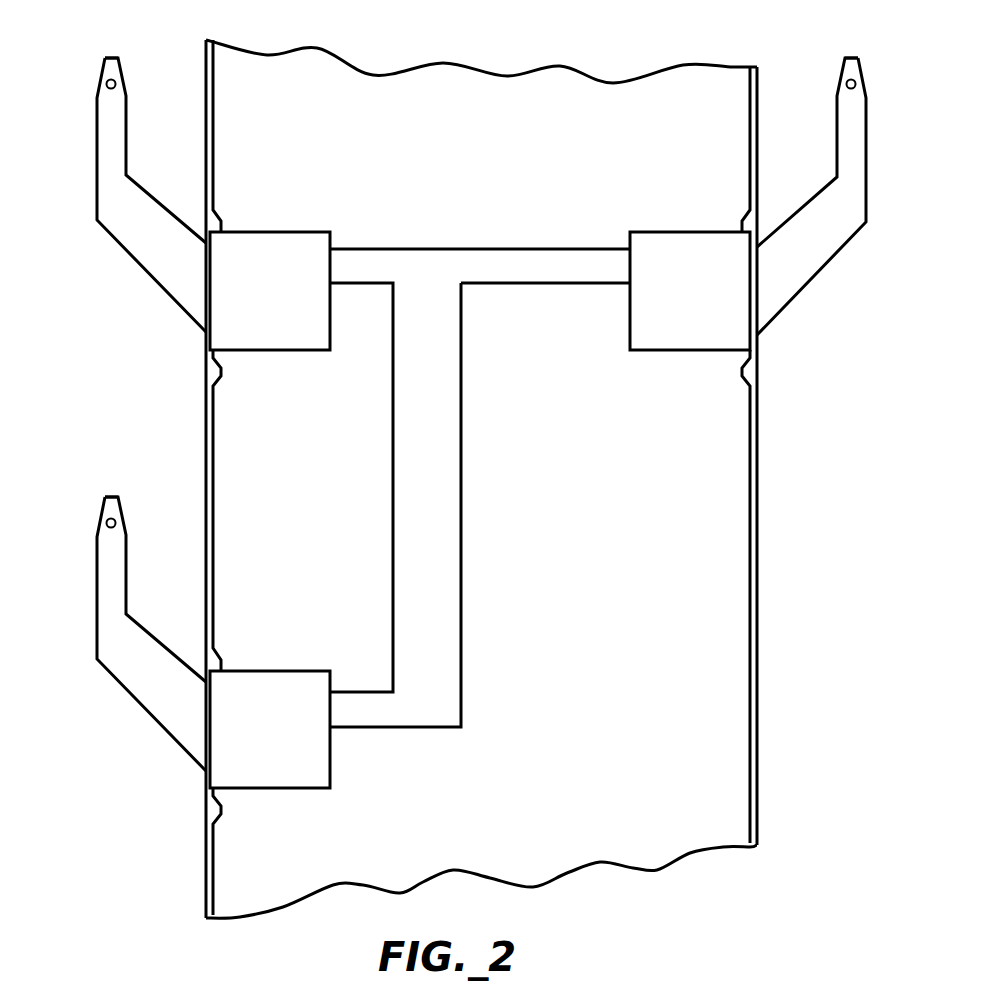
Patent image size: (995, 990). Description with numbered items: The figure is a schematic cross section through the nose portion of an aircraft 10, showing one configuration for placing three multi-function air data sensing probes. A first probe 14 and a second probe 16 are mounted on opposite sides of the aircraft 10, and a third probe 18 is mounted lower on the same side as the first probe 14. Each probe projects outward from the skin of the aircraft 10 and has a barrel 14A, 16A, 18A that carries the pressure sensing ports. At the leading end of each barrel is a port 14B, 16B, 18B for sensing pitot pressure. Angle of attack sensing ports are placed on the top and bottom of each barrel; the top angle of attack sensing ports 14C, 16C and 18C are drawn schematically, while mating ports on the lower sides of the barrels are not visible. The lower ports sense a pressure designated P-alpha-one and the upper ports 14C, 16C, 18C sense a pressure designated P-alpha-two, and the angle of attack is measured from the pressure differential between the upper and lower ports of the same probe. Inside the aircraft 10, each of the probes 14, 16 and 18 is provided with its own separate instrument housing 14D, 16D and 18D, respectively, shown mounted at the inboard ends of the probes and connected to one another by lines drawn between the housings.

The aircraft 10 is at (762, 590).
The multi-function air data sensing probe 14 is at (119, 179).
The barrel 14A is at (129, 153).
The pitot pressure sensing port 14B is at (110, 57).
The top angle of attack sensing port 14C is at (119, 84).
The instrument housing 14D is at (253, 247).
The multi-function air data sensing probe 16 is at (836, 178).
The barrel 16A is at (835, 155).
The pitot pressure sensing port 16B is at (853, 57).
The top angle of attack sensing port 16C is at (845, 84).
The instrument housing 16D is at (707, 247).
The multi-function air data sensing probe 18 is at (119, 616).
The barrel 18A is at (129, 592).
The pitot pressure sensing port 18B is at (110, 496).
The top angle of attack sensing port 18C is at (119, 523).
The instrument housing 18D is at (253, 686).